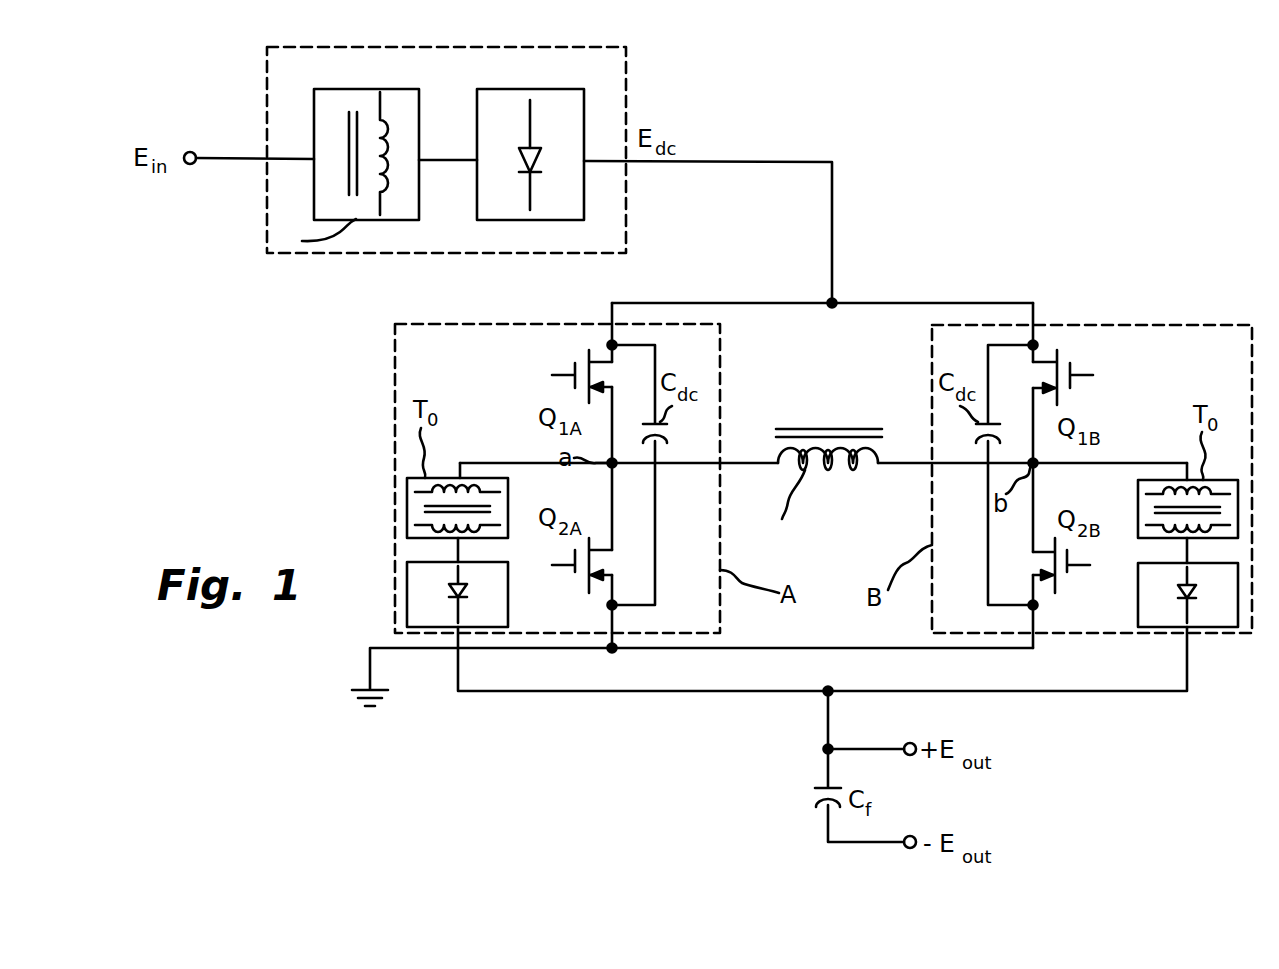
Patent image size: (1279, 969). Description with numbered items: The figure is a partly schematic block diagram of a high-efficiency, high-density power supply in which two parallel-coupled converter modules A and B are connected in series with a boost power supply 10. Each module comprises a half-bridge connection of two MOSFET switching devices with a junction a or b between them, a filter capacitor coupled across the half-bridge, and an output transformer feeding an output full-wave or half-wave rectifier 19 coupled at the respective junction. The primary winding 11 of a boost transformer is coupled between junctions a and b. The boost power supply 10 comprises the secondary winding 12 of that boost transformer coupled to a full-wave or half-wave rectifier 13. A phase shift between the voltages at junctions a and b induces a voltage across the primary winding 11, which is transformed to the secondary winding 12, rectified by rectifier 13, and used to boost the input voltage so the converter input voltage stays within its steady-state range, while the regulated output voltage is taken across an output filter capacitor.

The boost power supply 10 is at (626, 80).
The primary winding 11 is at (852, 470).
The secondary winding 12 is at (396, 152).
The rectifier 13 is at (528, 89).
The output rectifier 19 is at (508, 600).